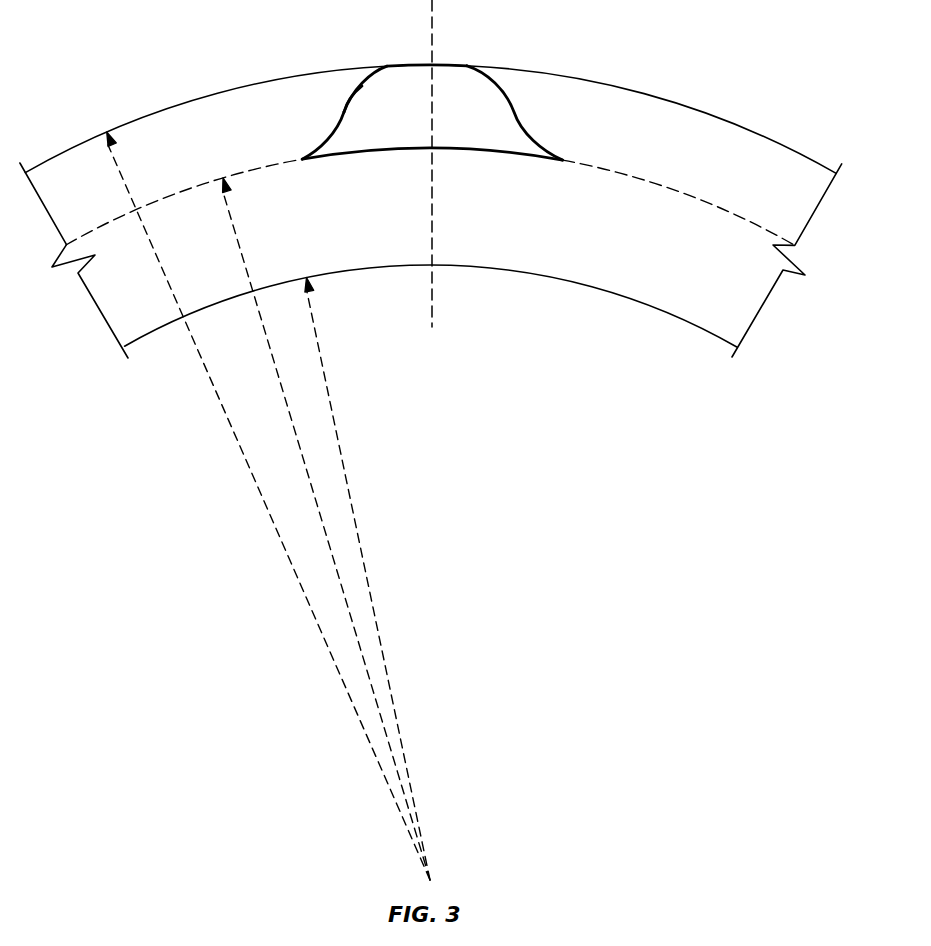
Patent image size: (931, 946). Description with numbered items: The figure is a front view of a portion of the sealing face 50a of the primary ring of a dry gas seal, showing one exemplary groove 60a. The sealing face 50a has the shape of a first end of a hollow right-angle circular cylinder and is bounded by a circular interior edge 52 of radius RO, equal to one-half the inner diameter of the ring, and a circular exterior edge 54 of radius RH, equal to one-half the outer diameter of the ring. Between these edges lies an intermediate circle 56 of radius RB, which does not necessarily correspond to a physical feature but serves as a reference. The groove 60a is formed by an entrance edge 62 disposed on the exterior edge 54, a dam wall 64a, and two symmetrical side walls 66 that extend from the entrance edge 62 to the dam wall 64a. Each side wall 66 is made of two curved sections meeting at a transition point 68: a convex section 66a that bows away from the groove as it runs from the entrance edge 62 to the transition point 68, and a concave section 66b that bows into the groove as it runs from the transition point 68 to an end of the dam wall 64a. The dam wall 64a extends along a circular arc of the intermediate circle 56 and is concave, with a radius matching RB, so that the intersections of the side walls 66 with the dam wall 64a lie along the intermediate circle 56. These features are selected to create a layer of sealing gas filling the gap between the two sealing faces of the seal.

The sealing face 50a is at (758, 164).
The interior edge 52 is at (557, 281).
The exterior edge 54 is at (702, 109).
The intermediate circle 56 is at (700, 201).
The groove 60a is at (428, 108).
The entrance edge 62 is at (413, 64).
The dam wall 64a is at (406, 148).
The side wall 66 is at (528, 126).
The curved section 66a is at (362, 86).
The curved section 66b is at (336, 128).
The transition point 68 is at (349, 104).
The radius of exterior edge RH is at (288, 555).
The radius of interior edge RO is at (365, 565).
The radius of intermediate circle RB is at (390, 740).